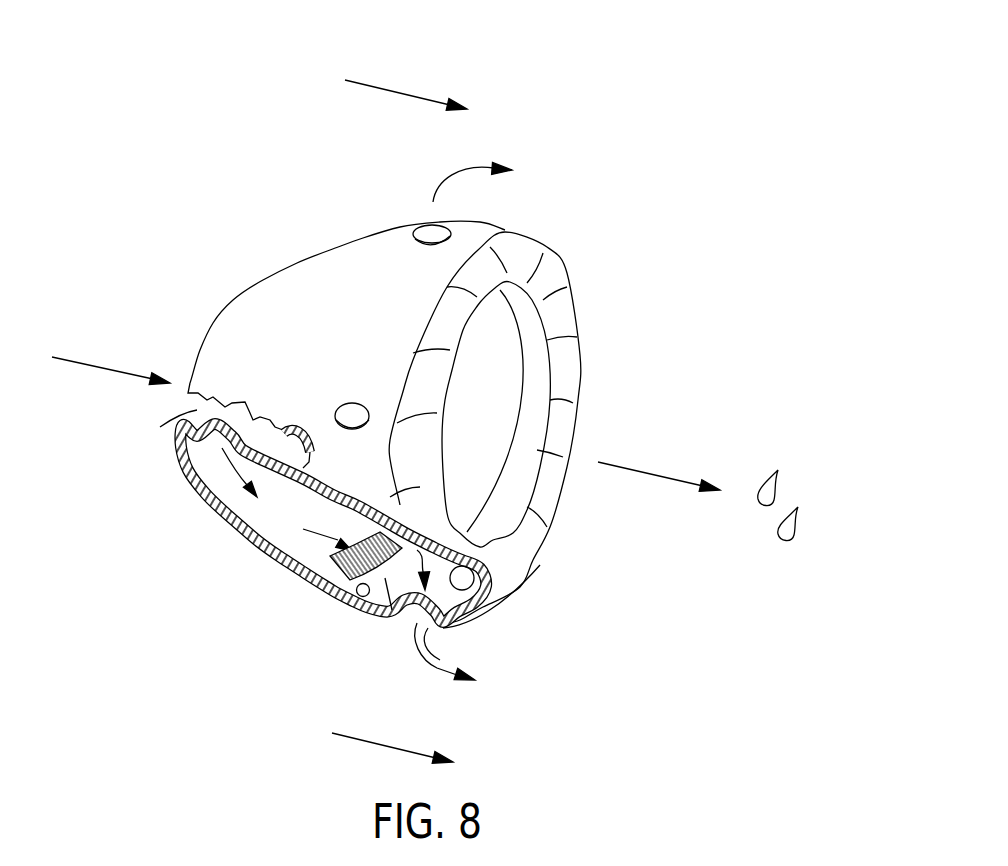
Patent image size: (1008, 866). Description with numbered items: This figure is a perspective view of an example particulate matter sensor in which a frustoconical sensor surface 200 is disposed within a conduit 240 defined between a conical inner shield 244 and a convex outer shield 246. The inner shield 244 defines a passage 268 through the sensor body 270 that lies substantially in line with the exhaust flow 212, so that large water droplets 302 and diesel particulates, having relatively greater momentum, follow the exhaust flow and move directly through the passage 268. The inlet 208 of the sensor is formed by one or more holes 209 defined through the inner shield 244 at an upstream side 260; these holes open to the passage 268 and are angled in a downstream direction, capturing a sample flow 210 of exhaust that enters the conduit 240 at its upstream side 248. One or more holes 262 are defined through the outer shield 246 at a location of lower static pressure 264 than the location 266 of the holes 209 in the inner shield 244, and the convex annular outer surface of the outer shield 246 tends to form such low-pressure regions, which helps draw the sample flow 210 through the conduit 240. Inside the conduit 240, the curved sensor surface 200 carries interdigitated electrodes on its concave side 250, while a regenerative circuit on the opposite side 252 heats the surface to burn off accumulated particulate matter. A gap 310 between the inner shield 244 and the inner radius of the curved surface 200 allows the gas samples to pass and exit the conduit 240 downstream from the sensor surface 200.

The sensor surface 200 is at (280, 560).
The inlet 208 is at (220, 442).
The holes 209 is at (220, 442).
The sample flow 210 is at (223, 445).
The exhaust flow 212 is at (380, 87).
The conduit 240 is at (263, 515).
The inner shield 244 is at (473, 587).
The outer shield 246 is at (360, 597).
The upstream side 248 is at (197, 410).
The concave side 250 is at (330, 558).
The opposite side 252 is at (391, 612).
The upstream side 260 is at (230, 405).
The holes 262 is at (470, 622).
The location of lower static pressure 264 is at (447, 661).
The location of the holes in the inner shield 266 is at (275, 410).
The passage 268 is at (518, 395).
The sensor body 270 is at (505, 222).
The water droplets 302 is at (800, 527).
The gap 310 is at (405, 505).